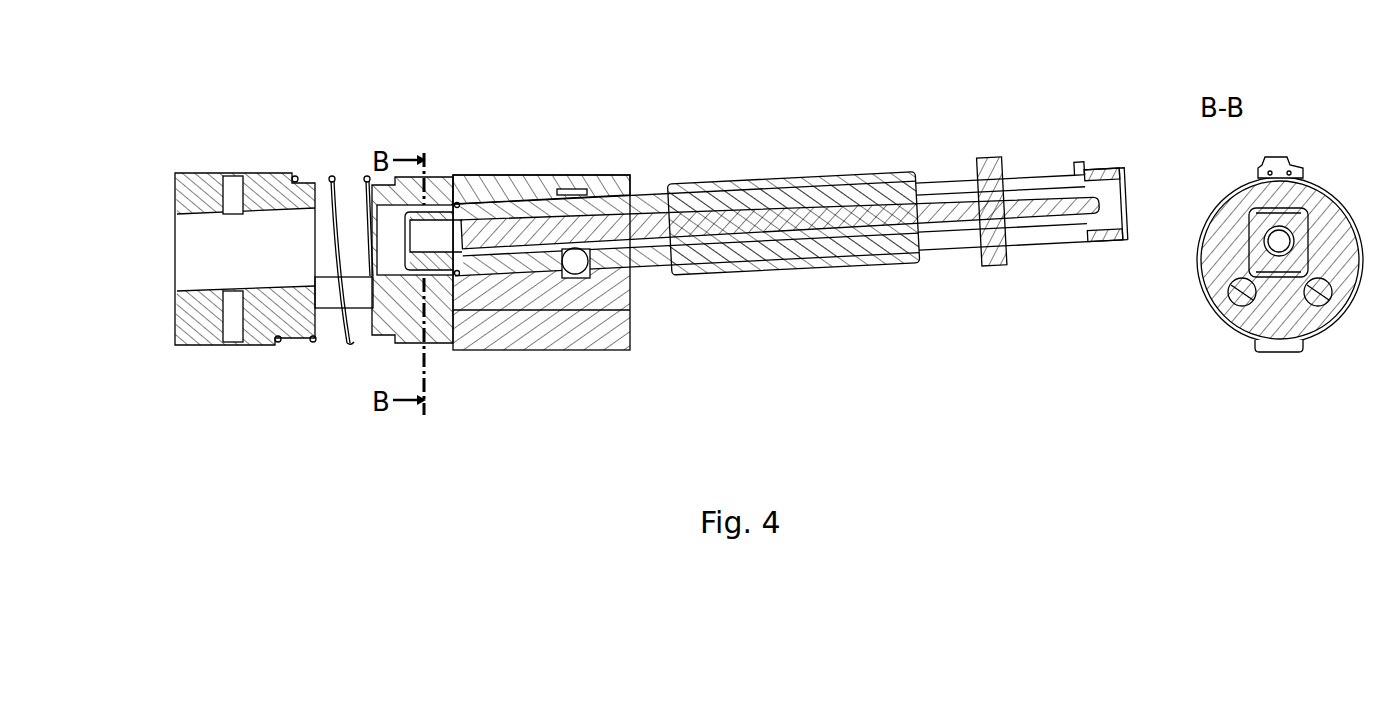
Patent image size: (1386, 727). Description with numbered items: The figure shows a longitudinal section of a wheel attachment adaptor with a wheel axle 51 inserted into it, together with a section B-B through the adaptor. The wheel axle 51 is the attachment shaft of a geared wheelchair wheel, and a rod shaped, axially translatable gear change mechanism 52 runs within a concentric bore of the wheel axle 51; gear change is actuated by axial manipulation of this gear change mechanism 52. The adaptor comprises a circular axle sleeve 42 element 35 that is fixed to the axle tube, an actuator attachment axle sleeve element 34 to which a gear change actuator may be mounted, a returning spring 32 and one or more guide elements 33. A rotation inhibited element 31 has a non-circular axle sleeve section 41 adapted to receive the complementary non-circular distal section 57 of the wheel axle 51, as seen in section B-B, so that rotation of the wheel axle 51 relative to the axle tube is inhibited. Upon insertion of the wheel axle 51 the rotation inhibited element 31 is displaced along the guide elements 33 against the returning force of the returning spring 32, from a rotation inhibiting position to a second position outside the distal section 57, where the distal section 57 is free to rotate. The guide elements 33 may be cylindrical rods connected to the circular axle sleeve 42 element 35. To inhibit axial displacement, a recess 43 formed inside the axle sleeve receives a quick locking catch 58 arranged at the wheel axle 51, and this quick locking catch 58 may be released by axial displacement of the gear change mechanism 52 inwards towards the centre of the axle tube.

The rotation inhibited element 31 is at (436, 178).
The returning spring 32 is at (333, 178).
The guide elements 33 is at (337, 293).
The actuator attachment axle sleeve element 34 is at (270, 192).
The circular axle sleeve element 35 is at (533, 182).
The non-circular axle sleeve section 41 is at (1277, 208).
The circular axle sleeve 42 is at (488, 183).
The recess 43 is at (577, 188).
The wheel axle 51 is at (796, 164).
The gear change mechanism 52 is at (793, 222).
The non-circular distal section 57 is at (432, 262).
The quick locking catch 58 is at (577, 278).